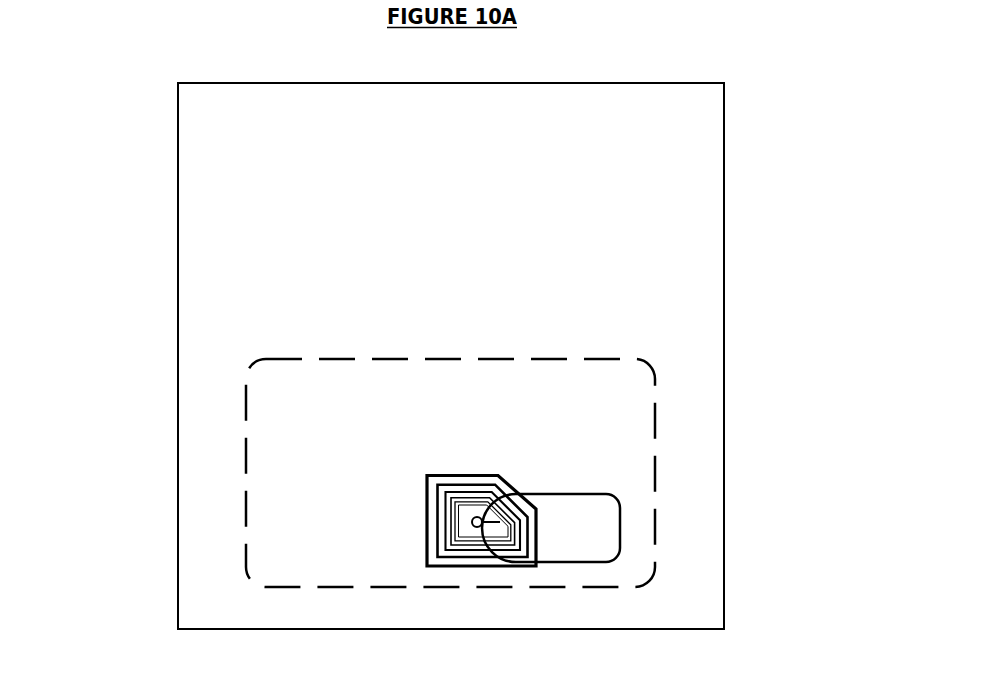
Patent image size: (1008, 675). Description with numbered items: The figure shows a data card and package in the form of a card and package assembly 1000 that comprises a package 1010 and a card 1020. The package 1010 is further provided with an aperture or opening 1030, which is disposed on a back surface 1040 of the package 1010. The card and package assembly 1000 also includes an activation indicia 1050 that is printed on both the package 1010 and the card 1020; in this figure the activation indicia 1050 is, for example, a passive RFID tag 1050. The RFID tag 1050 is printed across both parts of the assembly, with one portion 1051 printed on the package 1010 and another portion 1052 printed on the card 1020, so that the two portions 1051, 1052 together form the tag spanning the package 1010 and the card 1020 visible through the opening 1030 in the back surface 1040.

The card and package assembly 1000 is at (95, 391).
The package 1010 is at (518, 356).
The card 1020 is at (552, 464).
The aperture or opening 1030 is at (670, 506).
The back surface 1040 is at (252, 130).
The activation indicia 1050 is at (455, 433).
The portion 1051 is at (453, 503).
The portion 1052 is at (506, 484).